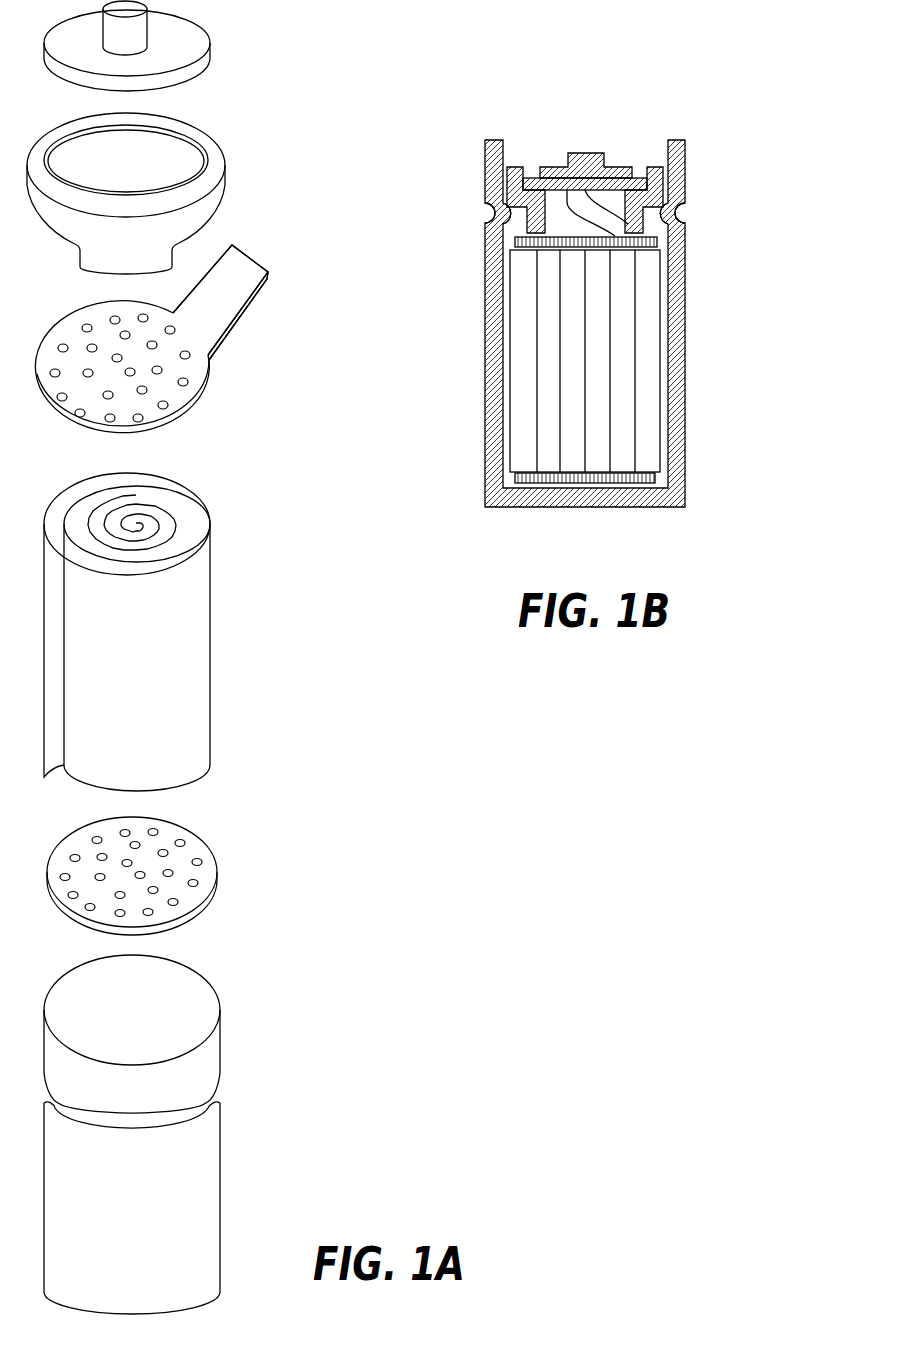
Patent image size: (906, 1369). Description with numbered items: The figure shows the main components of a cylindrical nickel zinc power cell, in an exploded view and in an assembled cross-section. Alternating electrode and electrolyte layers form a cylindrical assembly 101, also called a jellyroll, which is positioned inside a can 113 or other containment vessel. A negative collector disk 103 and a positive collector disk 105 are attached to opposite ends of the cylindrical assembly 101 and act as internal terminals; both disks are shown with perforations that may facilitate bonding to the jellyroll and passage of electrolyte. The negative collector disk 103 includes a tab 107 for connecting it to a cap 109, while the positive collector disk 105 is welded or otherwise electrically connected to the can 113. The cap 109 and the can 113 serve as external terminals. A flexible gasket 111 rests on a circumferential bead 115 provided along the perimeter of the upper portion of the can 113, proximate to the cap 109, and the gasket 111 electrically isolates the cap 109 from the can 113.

In FIG. 1A, the cylindrical assembly 101 is at (187, 632).
In FIG. 1B, the cylindrical assembly 101 is at (630, 393).
In FIG. 1A, the negative collector disk 103 is at (199, 339).
In FIG. 1B, the negative collector disk 103 is at (637, 243).
In FIG. 1A, the positive collector disk 105 is at (188, 874).
In FIG. 1B, the positive collector disk 105 is at (588, 482).
In FIG. 1A, the tab 107 is at (250, 255).
In FIG. 1B, the tab 107 is at (665, 217).
In FIG. 1A, the cap 109 is at (184, 46).
In FIG. 1B, the cap 109 is at (595, 138).
In FIG. 1A, the flexible gasket 111 is at (180, 190).
In FIG. 1B, the flexible gasket 111 is at (512, 152).
In FIG. 1A, the can 113 is at (192, 1134).
In FIG. 1B, the can 113 is at (696, 156).
In FIG. 1B, the circumferential bead 115 is at (490, 213).